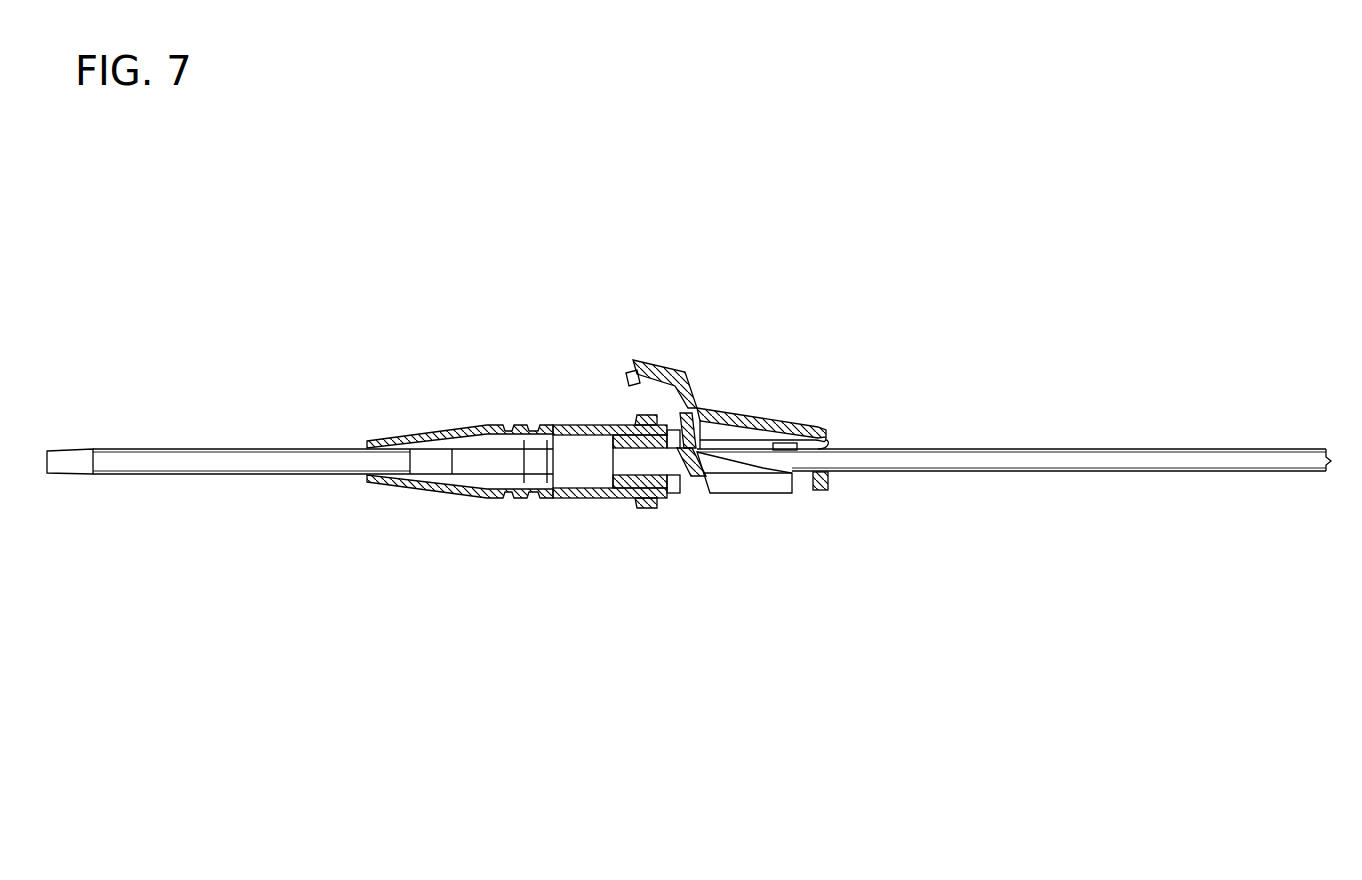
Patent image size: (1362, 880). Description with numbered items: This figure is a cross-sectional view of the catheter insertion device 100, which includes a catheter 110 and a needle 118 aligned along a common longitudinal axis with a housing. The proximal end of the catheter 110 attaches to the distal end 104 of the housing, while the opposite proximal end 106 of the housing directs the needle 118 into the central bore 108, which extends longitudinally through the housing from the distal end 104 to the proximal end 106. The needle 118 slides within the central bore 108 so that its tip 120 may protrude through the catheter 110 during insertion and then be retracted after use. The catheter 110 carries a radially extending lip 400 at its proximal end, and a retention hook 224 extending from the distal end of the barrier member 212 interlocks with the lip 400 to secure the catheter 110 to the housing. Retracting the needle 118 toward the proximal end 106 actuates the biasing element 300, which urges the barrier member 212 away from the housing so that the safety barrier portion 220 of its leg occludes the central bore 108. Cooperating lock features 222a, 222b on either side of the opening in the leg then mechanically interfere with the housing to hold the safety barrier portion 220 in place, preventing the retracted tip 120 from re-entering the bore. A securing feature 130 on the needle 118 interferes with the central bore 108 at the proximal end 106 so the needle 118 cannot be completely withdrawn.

The catheter insertion device 100 is at (352, 245).
The distal end 104 is at (580, 430).
The proximal end 106 is at (822, 453).
The central bore 108 is at (630, 459).
The catheter 110 is at (386, 442).
The needle 118 is at (1200, 450).
The tip 120 is at (735, 452).
The securing feature 130 is at (832, 482).
The barrier member 212 is at (781, 410).
The safety barrier portion 220 is at (693, 478).
The cooperating lock feature 222a is at (672, 478).
The cooperating lock feature 222b is at (667, 433).
The retention hook 224 is at (631, 370).
The biasing element 300 is at (803, 490).
The lip 400 is at (647, 418).